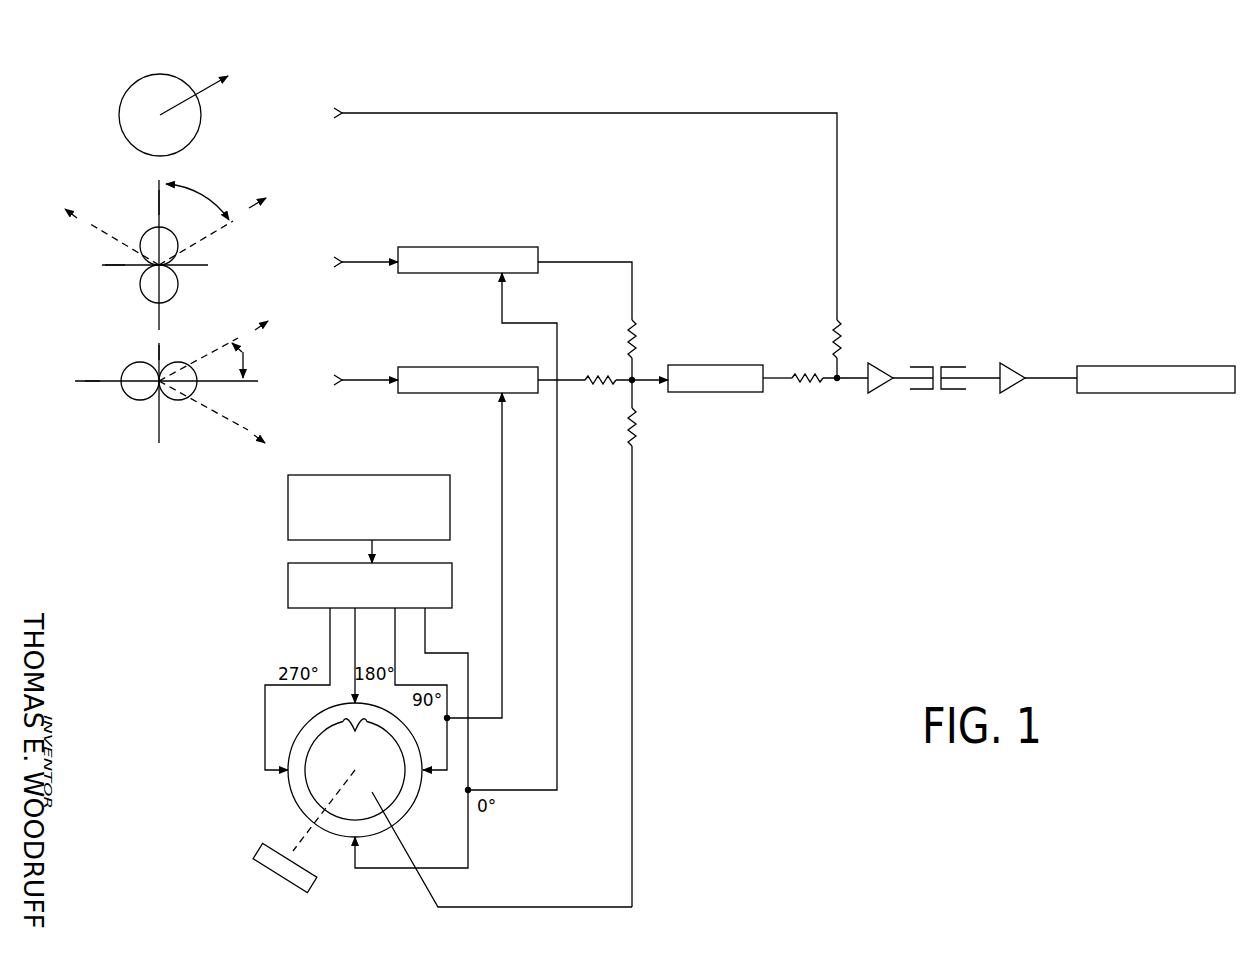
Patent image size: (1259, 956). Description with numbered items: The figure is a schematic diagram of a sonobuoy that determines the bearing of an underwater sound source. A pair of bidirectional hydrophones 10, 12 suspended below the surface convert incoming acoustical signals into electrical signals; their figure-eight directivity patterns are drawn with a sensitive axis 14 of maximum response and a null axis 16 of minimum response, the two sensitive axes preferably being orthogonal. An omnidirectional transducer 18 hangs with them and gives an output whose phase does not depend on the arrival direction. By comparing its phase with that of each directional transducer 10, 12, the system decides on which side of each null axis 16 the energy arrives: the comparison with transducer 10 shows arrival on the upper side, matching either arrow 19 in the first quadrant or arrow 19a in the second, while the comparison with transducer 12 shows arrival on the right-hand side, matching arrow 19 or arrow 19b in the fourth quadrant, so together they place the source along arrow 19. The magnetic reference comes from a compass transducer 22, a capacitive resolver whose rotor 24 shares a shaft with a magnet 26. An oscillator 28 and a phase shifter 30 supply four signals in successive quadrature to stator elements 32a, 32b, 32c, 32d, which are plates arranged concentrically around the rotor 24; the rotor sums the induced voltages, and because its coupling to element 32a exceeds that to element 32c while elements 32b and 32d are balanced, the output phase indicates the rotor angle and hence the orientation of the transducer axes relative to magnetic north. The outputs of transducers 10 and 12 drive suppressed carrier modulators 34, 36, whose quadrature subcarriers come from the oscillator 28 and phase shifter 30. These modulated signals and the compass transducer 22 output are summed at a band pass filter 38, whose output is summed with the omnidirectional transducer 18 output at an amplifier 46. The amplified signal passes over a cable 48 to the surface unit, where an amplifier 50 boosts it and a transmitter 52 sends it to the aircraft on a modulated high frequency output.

The bidirectional transducer 10 is at (70, 265).
The bidirectional transducer 12 is at (72, 381).
The sensitive axis 14 is at (158, 200).
The null axis 16 is at (115, 266).
The omnidirectional transducer 18 is at (98, 112).
The arrow indicating direction of arrival 19 is at (214, 82).
The arrow in second quadrant 19a is at (85, 219).
The arrow in fourth quadrant 19b is at (245, 426).
The compass transducer 22 is at (410, 803).
The rotor 24 is at (350, 798).
The magnet 26 is at (268, 874).
The oscillator 28 is at (450, 498).
The phase shifter 30 is at (452, 590).
The stator element 32a is at (306, 812).
The stator element 32b is at (418, 802).
The stator element 32c is at (323, 714).
The stator element 32d is at (290, 796).
The suppressed carrier modulator 34 is at (468, 247).
The suppressed carrier modulator 36 is at (468, 367).
The band pass filter 38 is at (740, 393).
The amplifier 46 is at (884, 390).
The cable 48 is at (953, 391).
The amplifier 50 is at (1012, 390).
The transmitter 52 is at (1121, 394).